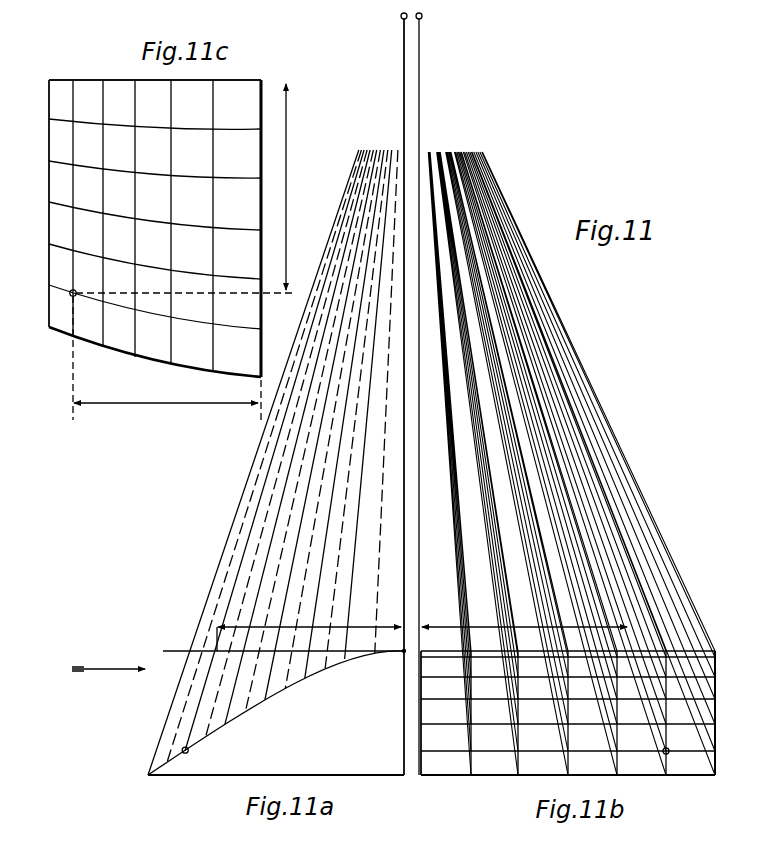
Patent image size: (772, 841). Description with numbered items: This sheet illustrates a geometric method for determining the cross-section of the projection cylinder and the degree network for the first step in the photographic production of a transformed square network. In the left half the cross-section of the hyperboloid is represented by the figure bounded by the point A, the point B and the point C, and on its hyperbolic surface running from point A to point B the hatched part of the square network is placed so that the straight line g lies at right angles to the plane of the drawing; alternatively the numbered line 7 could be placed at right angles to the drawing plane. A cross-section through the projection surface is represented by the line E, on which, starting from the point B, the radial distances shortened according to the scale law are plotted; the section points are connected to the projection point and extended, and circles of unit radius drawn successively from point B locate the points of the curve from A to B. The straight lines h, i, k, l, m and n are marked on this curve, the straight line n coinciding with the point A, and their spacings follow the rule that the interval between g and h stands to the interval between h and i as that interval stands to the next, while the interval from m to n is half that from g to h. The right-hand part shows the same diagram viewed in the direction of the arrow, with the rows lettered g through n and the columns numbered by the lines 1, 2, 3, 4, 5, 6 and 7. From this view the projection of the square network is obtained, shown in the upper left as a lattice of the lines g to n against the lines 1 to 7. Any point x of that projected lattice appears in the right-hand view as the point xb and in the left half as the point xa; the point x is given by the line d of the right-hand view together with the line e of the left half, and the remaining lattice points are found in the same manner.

In FIG. 11A, the point A is at (267, 781).
In FIG. 11A, the point B is at (410, 651).
In FIG. 11A, the point C is at (410, 404).
In FIG. 11A, the line E is at (276, 650).
In FIG. 11, the line d is at (524, 620).
In FIG. 11C, the line e is at (166, 396).
In FIG. 11A, the line e is at (309, 632).
In FIG. 11C, the point X x is at (79, 287).
In FIG. 11A, the point Xa xa is at (197, 755).
In FIG. 11B, the point Xb xb is at (674, 758).
In FIG. 11C, the straight line g is at (255, 228).
In FIG. 11A, the straight line g is at (398, 656).
In FIG. 11B, the straight line g is at (568, 647).
In FIG. 11C, the straight line h is at (208, 225).
In FIG. 11A, the straight line h is at (368, 410).
In FIG. 11B, the straight line h is at (568, 657).
In FIG. 11C, the straight line i is at (167, 222).
In FIG. 11A, the straight line i is at (344, 420).
In FIG. 11B, the straight line i is at (568, 671).
In FIG. 11C, the straight line k is at (130, 218).
In FIG. 11A, the straight line k is at (319, 432).
In FIG. 11B, the straight line k is at (568, 693).
In FIG. 11C, the straight line l is at (99, 213).
In FIG. 11A, the straight line l is at (297, 444).
In FIG. 11B, the straight line l is at (568, 717).
In FIG. 11C, the straight line m is at (68, 208).
In FIG. 11A, the straight line m is at (273, 458).
In FIG. 11B, the straight line m is at (568, 744).
In FIG. 11C, the straight line n is at (43, 203).
In FIG. 11A, the straight line n is at (253, 462).
In FIG. 11B, the straight line n is at (568, 768).
In FIG. 11C, the line 1 is at (161, 355).
In FIG. 11B, the line 1 is at (714, 724).
In FIG. 11C, the line 2 is at (161, 310).
In FIG. 11B, the line 2 is at (665, 724).
In FIG. 11C, the line 3 is at (161, 265).
In FIG. 11B, the line 3 is at (616, 724).
In FIG. 11C, the line 4 is at (161, 219).
In FIG. 11B, the line 4 is at (567, 724).
In FIG. 11C, the line 5 is at (161, 173).
In FIG. 11B, the line 5 is at (517, 724).
In FIG. 11C, the line 6 is at (161, 127).
In FIG. 11B, the line 6 is at (470, 724).
In FIG. 11C, the line 7 is at (286, 80).
In FIG. 11B, the line 7 is at (420, 724).